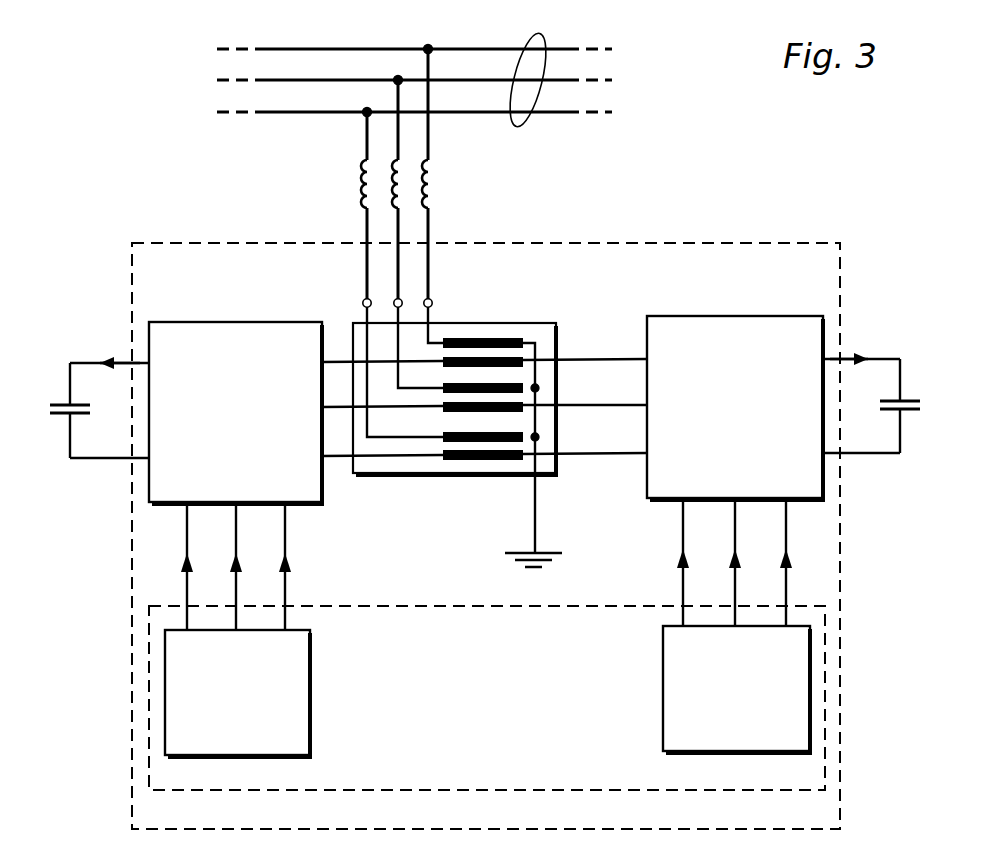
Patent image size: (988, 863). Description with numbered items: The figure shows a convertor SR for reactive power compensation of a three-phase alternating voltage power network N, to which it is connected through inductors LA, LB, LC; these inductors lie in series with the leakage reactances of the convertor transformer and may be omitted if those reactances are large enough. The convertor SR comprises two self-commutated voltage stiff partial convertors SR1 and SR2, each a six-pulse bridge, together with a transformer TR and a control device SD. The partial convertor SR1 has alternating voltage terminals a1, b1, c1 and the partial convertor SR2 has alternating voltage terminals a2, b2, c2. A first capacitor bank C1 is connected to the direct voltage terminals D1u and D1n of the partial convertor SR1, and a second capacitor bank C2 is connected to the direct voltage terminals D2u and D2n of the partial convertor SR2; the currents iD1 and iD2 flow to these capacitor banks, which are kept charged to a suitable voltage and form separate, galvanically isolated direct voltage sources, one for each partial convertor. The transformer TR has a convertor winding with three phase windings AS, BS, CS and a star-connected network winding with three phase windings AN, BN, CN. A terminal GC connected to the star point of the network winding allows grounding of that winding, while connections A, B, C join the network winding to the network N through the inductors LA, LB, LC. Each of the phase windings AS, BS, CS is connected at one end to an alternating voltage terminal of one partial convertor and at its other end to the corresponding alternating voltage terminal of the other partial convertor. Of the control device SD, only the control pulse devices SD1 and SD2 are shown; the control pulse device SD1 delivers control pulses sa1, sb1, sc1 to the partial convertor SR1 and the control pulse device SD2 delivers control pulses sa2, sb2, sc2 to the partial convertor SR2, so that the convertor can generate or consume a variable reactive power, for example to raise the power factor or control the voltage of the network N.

The three-phase alternating voltage power network N is at (538, 36).
The inductor LA is at (360, 186).
The inductor LB is at (400, 176).
The inductor LC is at (430, 192).
The connection A is at (362, 302).
The connection B is at (402, 298).
The connection C is at (433, 301).
The convertor SR is at (818, 274).
The transformer TR is at (483, 398).
The phase winding of network winding CN is at (526, 340).
The phase winding of convertor winding CS is at (524, 359).
The phase winding of network winding BN is at (524, 386).
The phase winding of convertor winding BS is at (524, 410).
The phase winding of network winding AN is at (456, 444).
The phase winding of convertor winding AS is at (496, 462).
The terminal GC is at (538, 518).
The partial convertor SR1 is at (320, 500).
The partial convertor SR2 is at (710, 497).
The alternating voltage terminal c1 is at (465, 363).
The alternating voltage terminal b1 is at (465, 409).
The alternating voltage terminal a1 is at (465, 457).
The alternating voltage terminal c2 is at (561, 360).
The alternating voltage terminal b2 is at (562, 405).
The alternating voltage terminal a2 is at (562, 454).
The direct voltage terminal D1u is at (134, 363).
The direct voltage terminal D1n is at (134, 458).
The direct voltage terminal D2u is at (831, 359).
The direct voltage terminal D2n is at (831, 453).
The current iD1 is at (112, 347).
The current iD2 is at (855, 342).
The first capacitor bank C1 is at (75, 416).
The second capacitor bank C2 is at (894, 412).
The control device SD is at (812, 784).
The control pulse device SD1 is at (228, 751).
The control pulse device SD2 is at (728, 747).
The control pulse sa1 is at (170, 566).
The control pulse sb1 is at (219, 566).
The control pulse sc1 is at (268, 566).
The control pulse sa2 is at (664, 562).
The control pulse sb2 is at (716, 562).
The control pulse sc2 is at (767, 562).